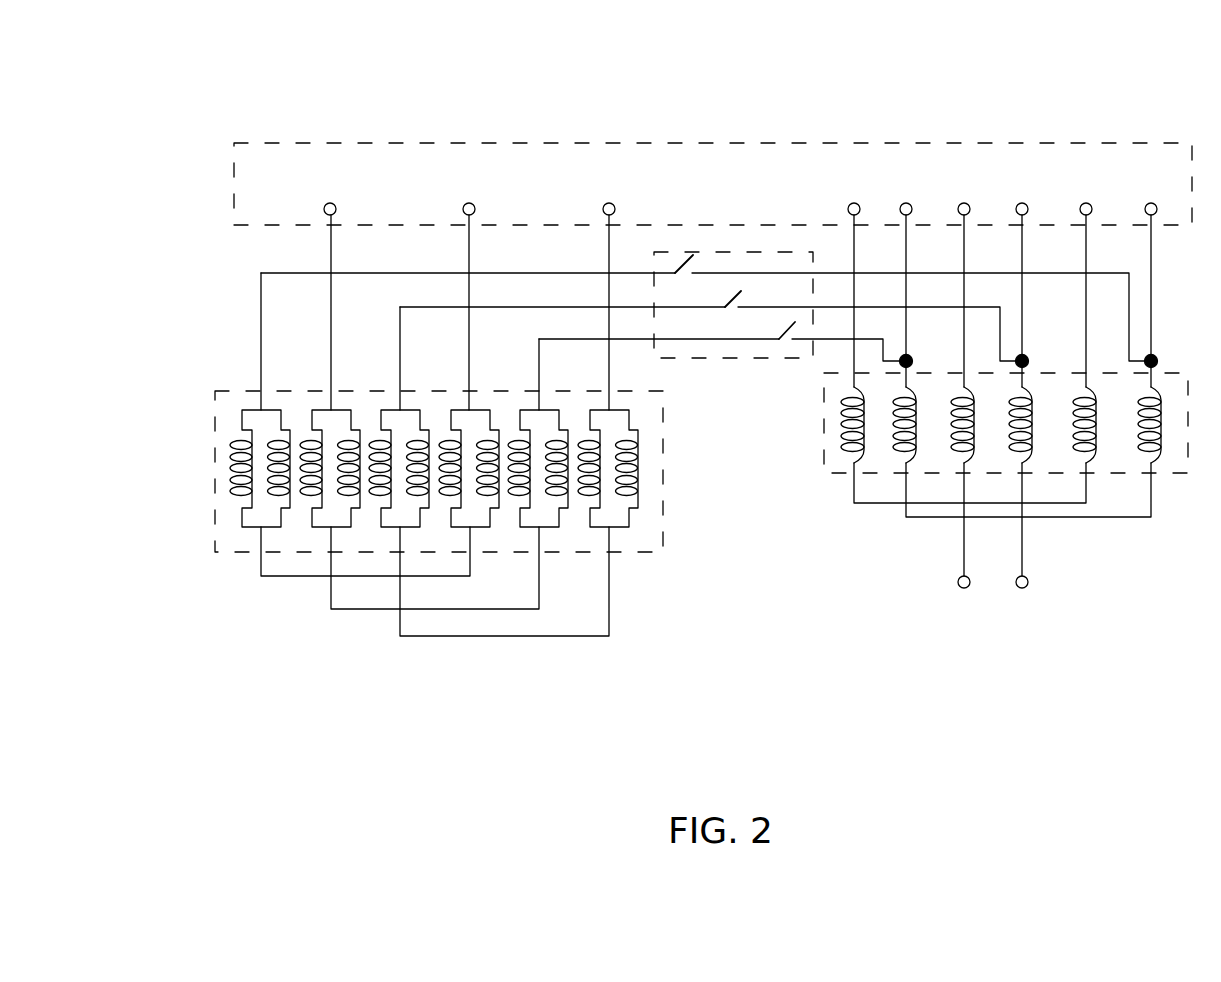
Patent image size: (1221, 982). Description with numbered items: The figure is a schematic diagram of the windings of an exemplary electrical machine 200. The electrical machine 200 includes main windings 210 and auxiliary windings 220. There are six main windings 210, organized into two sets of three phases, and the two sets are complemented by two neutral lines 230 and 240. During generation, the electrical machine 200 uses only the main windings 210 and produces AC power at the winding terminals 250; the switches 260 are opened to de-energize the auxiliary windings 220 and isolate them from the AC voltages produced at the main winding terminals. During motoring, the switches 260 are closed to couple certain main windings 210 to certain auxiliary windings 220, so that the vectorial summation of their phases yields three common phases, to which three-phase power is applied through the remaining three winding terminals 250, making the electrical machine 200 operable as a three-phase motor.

The electrical machine 200 is at (208, 55).
The main windings 210 is at (1183, 478).
The auxiliary windings 220 is at (663, 552).
The neutral line 230 is at (1029, 582).
The neutral line 240 is at (950, 582).
The winding terminals 250 is at (758, 142).
The switches 260 is at (732, 360).